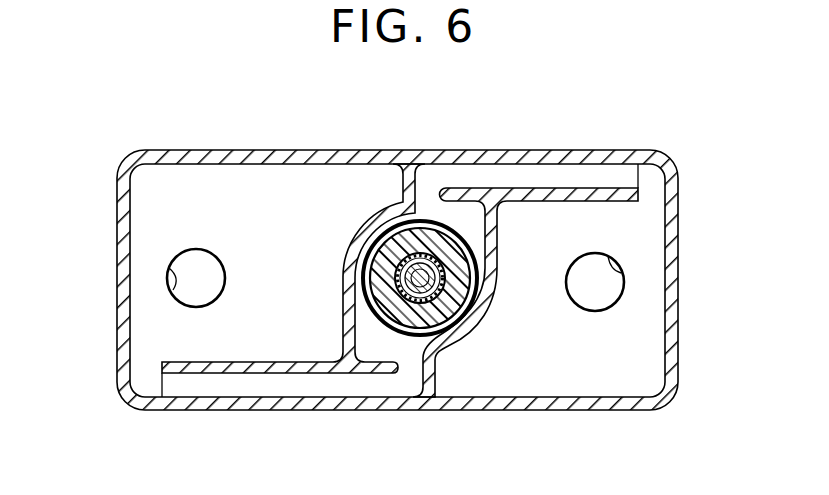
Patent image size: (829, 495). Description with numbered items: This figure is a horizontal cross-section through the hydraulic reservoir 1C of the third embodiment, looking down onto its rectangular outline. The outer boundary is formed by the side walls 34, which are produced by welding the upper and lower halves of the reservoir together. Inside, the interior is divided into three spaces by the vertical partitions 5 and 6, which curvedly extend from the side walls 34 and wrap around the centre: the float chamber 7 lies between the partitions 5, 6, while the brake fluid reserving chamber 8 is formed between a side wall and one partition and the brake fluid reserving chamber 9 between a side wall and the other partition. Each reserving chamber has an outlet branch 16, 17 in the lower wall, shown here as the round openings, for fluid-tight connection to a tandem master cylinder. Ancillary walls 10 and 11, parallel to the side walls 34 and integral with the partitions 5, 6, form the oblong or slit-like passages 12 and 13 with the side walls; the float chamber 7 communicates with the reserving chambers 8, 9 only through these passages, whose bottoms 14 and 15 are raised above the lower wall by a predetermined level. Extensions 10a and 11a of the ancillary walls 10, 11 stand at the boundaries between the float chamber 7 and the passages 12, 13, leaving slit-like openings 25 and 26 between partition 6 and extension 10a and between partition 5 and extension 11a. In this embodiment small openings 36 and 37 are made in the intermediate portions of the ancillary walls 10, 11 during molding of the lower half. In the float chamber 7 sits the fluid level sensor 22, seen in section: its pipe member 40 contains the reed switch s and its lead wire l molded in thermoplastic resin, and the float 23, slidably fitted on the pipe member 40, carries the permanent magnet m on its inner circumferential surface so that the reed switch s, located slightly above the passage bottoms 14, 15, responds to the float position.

The hydraulic reservoir 1C is at (657, 103).
The vertical partition 5 is at (468, 334).
The vertical partition 6 is at (377, 212).
The float chamber 7 is at (383, 322).
The brake fluid reserving chamber 8 is at (184, 328).
The brake fluid reserving chamber 9 is at (555, 355).
The ancillary wall 10 is at (572, 190).
The extension 10a is at (472, 195).
The ancillary wall 11 is at (223, 364).
The extension 11a is at (385, 375).
The oblong passage 12 is at (603, 176).
The oblong passage 13 is at (318, 383).
The bottom of oblong passage 14 is at (427, 195).
The bottom of oblong passage 15 is at (410, 367).
The outlet branch 16 is at (620, 276).
The outlet branch 17 is at (173, 289).
The fluid level sensor 22 is at (370, 278).
The float 23 is at (447, 278).
The slit-like opening 25 is at (430, 198).
The slit-like opening 26 is at (430, 395).
The side walls 34 is at (252, 158).
The small opening 36 is at (547, 202).
The small opening 37 is at (287, 374).
The pipe member 40 is at (442, 265).
The lead wire l is at (370, 252).
The reed switch s is at (407, 286).
The permanent magnet m is at (457, 280).